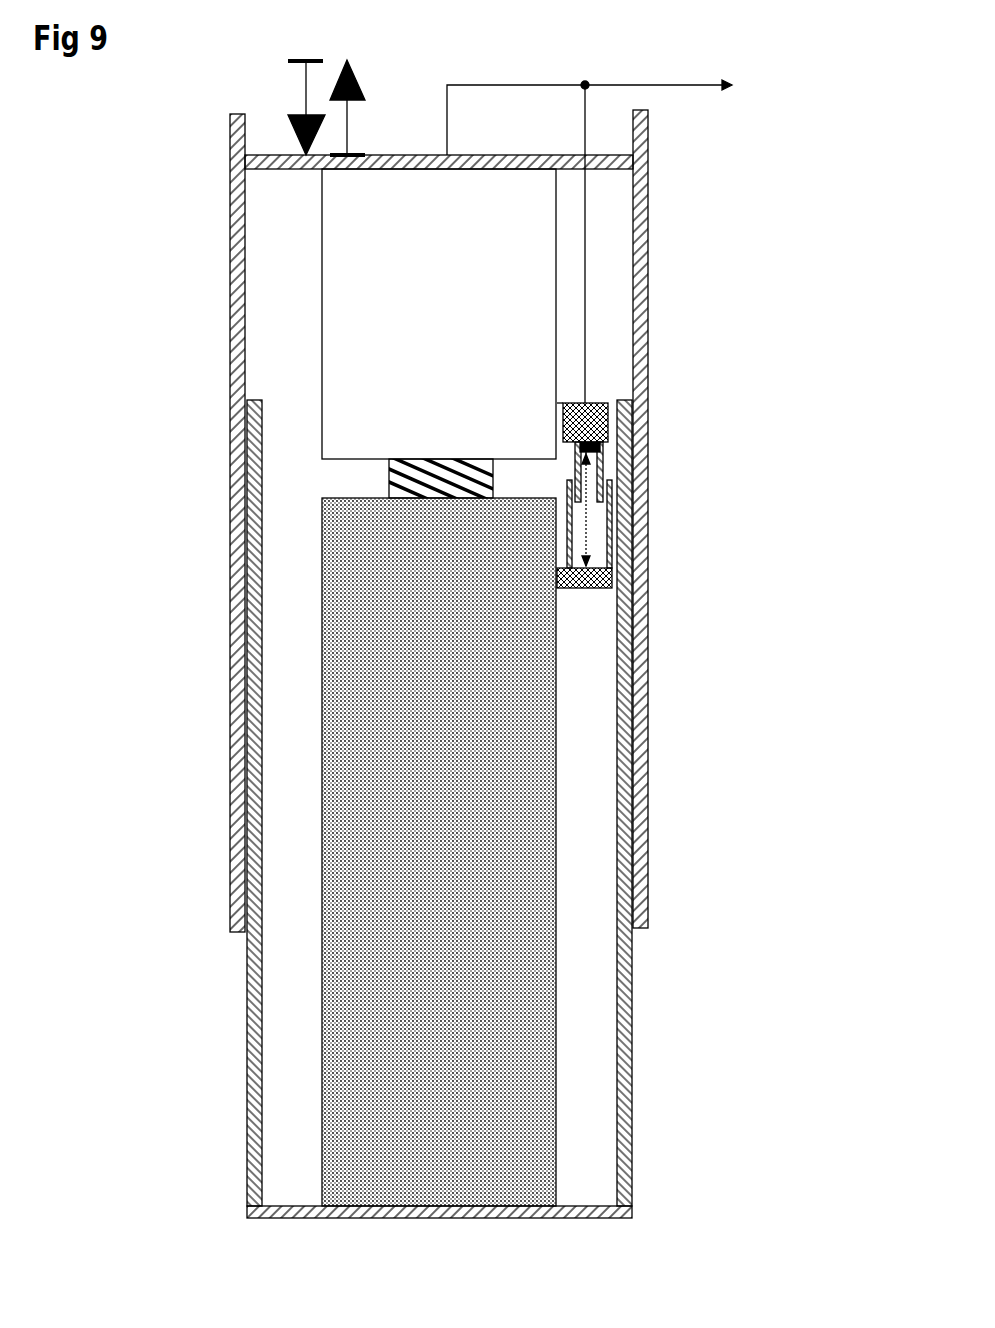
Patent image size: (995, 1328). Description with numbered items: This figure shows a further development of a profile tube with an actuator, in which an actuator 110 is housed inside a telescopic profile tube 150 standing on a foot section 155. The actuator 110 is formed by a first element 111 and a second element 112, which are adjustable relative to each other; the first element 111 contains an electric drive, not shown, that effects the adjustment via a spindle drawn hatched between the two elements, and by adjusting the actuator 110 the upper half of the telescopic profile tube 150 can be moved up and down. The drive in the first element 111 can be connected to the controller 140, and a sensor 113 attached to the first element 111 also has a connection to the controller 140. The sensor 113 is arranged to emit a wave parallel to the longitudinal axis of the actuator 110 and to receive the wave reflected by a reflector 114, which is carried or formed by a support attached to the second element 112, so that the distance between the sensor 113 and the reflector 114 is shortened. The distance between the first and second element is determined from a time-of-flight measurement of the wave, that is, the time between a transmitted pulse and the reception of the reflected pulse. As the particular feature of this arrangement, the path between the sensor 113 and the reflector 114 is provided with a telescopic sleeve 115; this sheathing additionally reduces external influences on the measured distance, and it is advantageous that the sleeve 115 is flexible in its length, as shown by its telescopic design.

The actuator 110 is at (297, 381).
The first element 111 is at (460, 335).
The second element 112 is at (556, 1137).
The sensor 113 is at (605, 442).
The reflector 114 is at (603, 566).
The telescopic sleeve 115 is at (615, 497).
The controller 140 is at (618, 238).
The telescopic profile tube 150 is at (229, 803).
The foot section 155 is at (632, 1210).